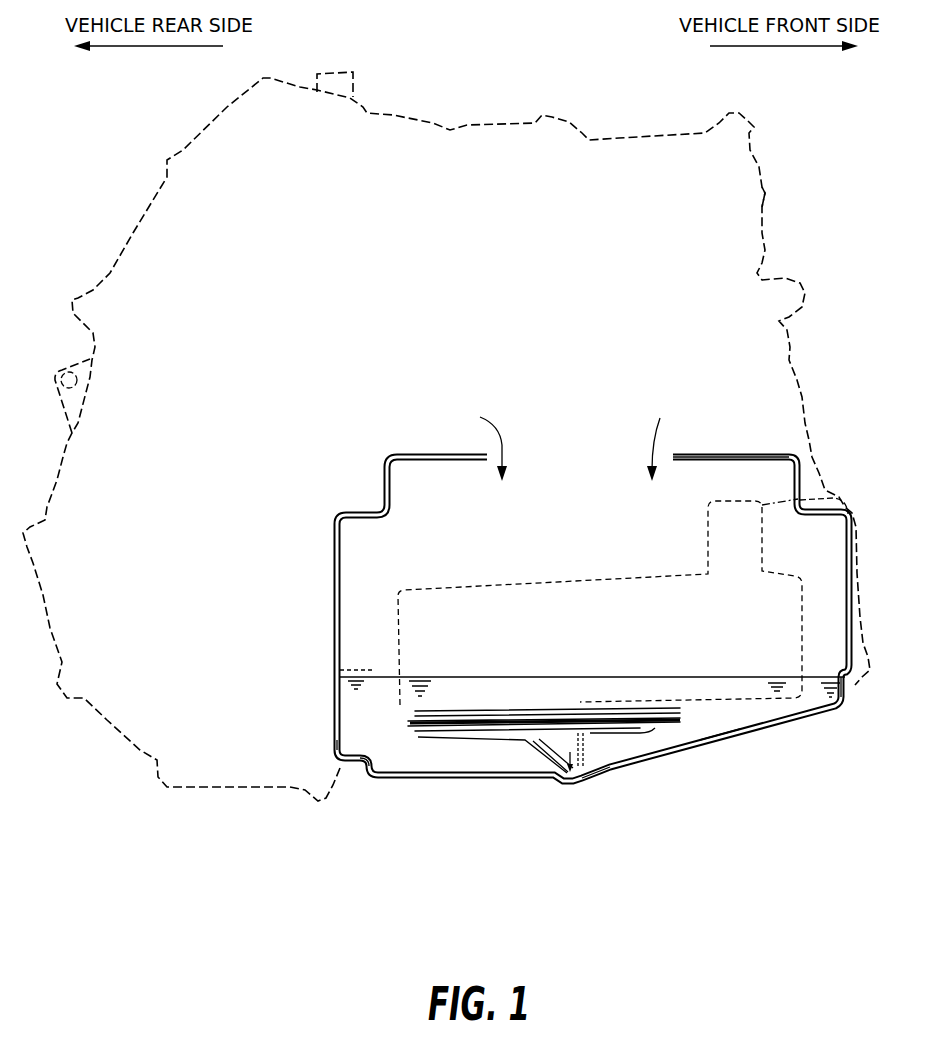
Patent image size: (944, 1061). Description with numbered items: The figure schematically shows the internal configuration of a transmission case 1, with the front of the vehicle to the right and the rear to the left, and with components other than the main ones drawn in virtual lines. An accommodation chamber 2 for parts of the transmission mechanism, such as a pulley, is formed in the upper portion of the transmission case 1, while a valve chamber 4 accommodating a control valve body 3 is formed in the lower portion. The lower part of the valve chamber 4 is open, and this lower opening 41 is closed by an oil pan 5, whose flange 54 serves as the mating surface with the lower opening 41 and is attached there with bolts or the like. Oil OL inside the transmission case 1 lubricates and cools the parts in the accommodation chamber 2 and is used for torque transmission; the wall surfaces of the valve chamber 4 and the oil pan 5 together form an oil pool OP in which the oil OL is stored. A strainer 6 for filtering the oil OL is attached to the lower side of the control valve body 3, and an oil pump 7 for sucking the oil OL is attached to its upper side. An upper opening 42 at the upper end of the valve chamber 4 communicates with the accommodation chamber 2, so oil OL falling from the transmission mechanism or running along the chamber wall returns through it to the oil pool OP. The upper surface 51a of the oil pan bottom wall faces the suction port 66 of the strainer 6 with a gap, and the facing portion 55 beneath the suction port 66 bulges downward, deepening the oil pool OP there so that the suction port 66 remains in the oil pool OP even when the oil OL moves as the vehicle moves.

The transmission case 1 is at (766, 193).
The accommodation chamber 2 is at (434, 332).
The control valve body 3 is at (396, 619).
The valve chamber 4 is at (548, 548).
The oil pan 5 is at (850, 701).
The strainer 6 is at (443, 746).
The oil pump 7 is at (842, 500).
The lower opening 41 is at (325, 800).
The upper opening 42 is at (665, 450).
The upper surface 51a is at (723, 734).
The flange 54 is at (358, 763).
The facing portion 55 is at (603, 780).
The suction port 66 is at (571, 783).
The oil OL is at (492, 423).
The oil pool OP is at (372, 672).